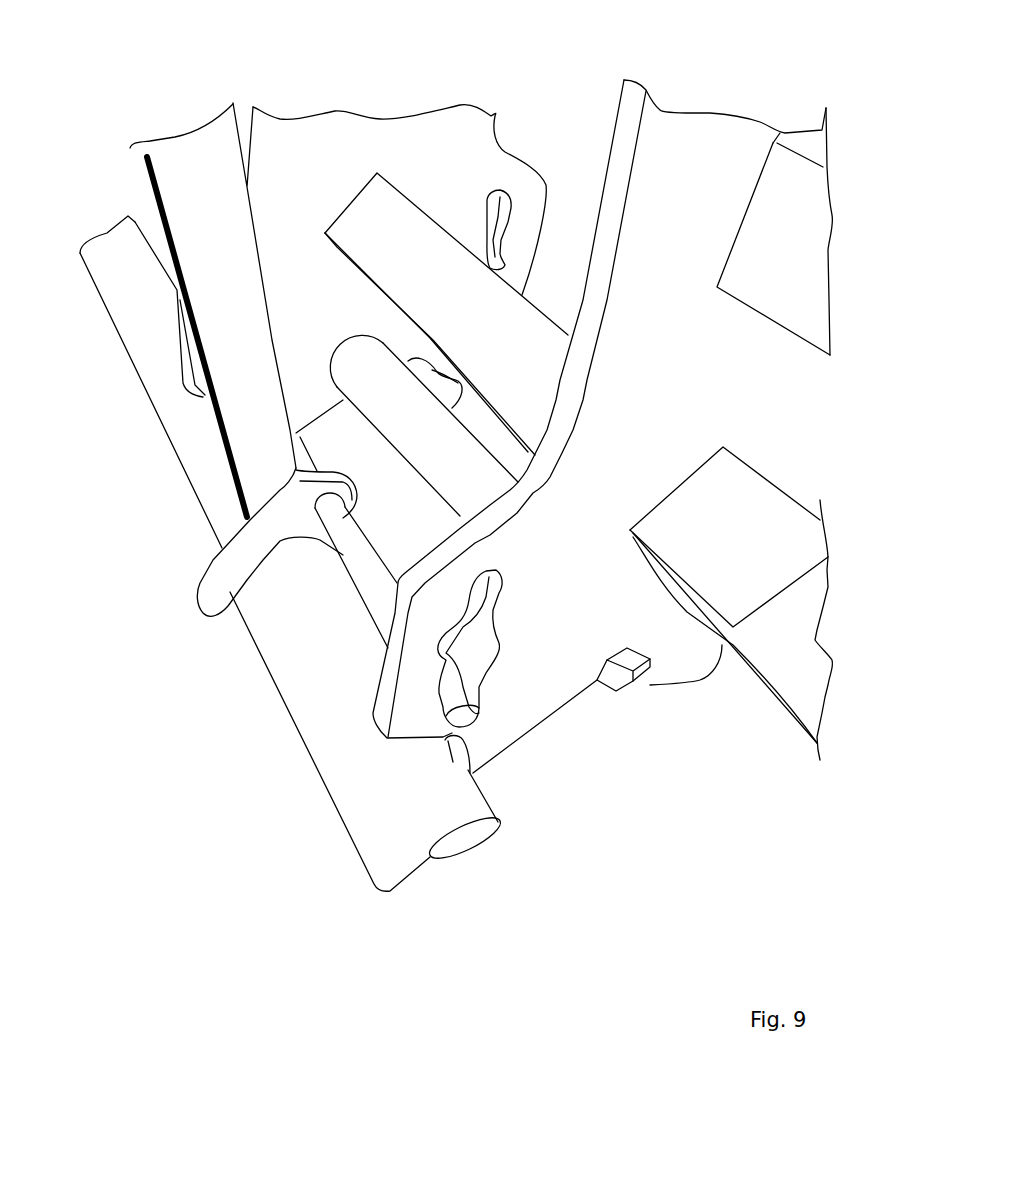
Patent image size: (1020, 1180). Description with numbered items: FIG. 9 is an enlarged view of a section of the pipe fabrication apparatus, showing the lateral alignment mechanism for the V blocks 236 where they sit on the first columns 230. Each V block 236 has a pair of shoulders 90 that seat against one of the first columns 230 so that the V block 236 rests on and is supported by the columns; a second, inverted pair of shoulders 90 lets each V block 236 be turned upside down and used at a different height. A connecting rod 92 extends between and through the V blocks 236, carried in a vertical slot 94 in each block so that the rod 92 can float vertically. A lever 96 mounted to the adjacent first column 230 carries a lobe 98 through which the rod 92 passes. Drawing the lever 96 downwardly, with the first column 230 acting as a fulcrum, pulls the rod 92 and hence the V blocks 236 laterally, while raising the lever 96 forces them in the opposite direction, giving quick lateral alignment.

The shoulders 90 is at (447, 552).
The connecting rod 92 is at (350, 542).
The vertical slot 94 is at (483, 653).
The lever 96 is at (162, 168).
The lobe 98 is at (340, 488).
The first column 230 is at (383, 848).
The V block 236 is at (373, 142).